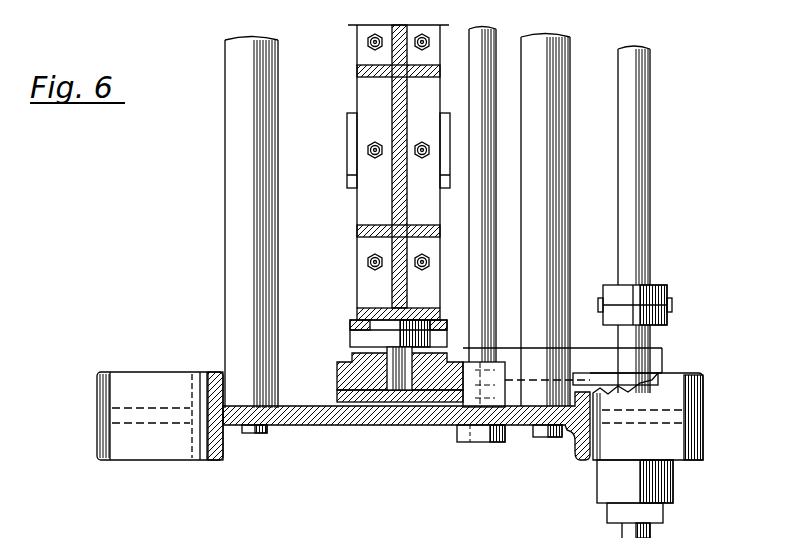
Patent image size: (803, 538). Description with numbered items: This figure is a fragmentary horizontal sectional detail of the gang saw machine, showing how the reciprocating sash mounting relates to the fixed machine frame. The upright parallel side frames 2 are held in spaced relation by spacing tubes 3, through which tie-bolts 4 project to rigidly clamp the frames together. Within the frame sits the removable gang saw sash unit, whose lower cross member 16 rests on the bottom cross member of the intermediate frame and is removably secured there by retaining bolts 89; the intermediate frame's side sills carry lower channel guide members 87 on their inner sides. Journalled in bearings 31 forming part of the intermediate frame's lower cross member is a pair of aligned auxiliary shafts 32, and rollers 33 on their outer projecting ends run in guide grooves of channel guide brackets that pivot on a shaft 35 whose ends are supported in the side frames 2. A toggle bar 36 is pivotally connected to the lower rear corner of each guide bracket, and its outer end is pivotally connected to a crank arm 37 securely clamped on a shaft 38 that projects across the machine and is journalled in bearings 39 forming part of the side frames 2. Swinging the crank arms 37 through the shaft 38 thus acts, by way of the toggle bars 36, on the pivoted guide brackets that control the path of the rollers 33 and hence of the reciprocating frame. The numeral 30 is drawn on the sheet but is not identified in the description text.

The side frames 2 is at (300, 425).
The spacing tubes 3 is at (240, 305).
The tie-bolts 4 is at (256, 434).
The lower cross member 16 is at (377, 166).
The clamp block 30 is at (377, 405).
The bearings 31 is at (392, 330).
The auxiliary shafts 32 is at (400, 388).
The rollers 33 is at (362, 388).
The shaft 35 is at (480, 273).
The toggle bar 36 is at (606, 340).
The crank arm 37 is at (662, 322).
The shaft 38 is at (651, 200).
The bearings 39 is at (658, 497).
The lower channel guide members 87 is at (355, 318).
The retaining bolts 89 is at (373, 142).